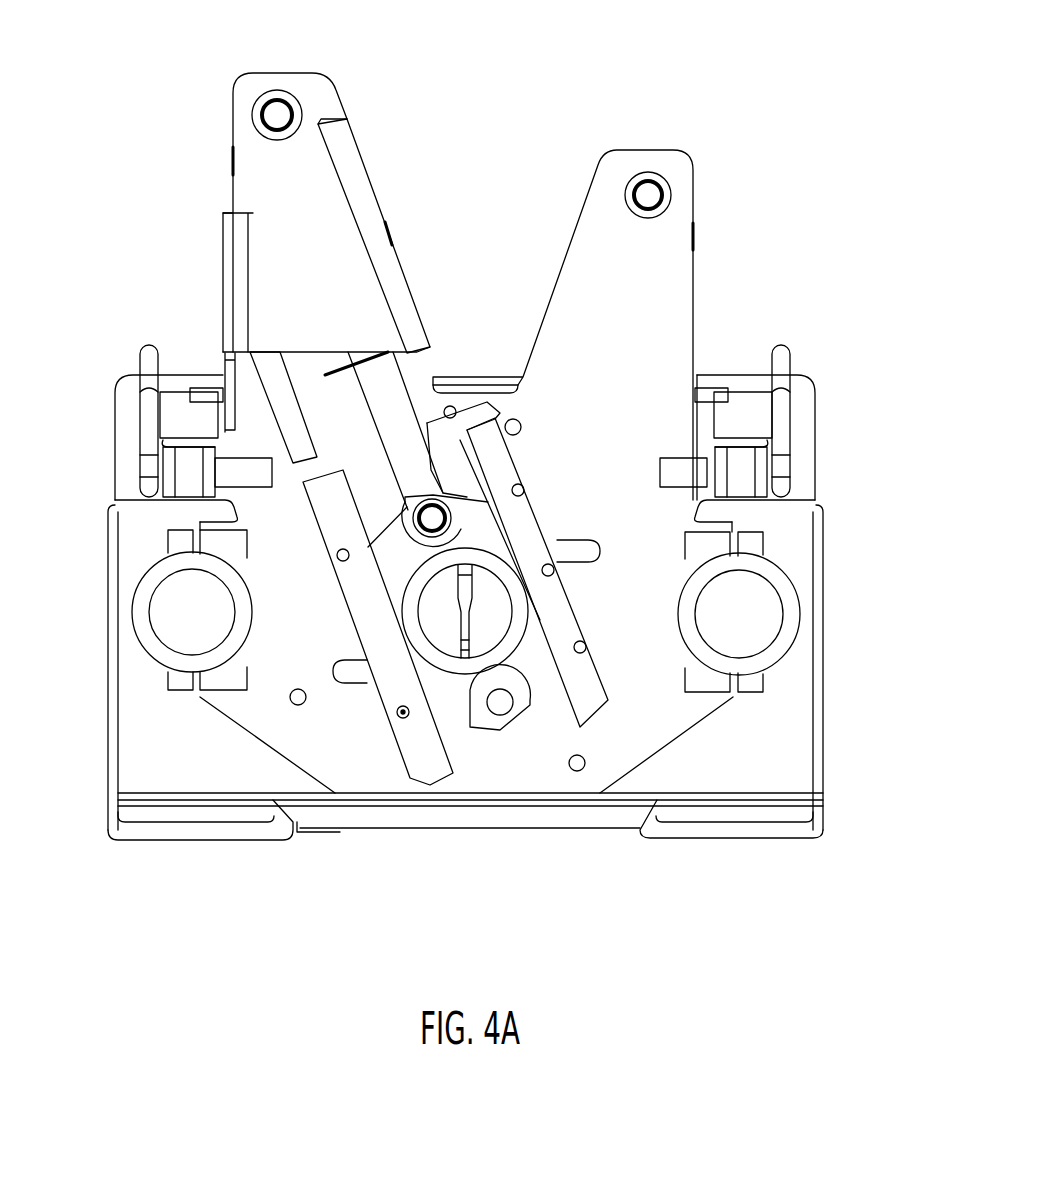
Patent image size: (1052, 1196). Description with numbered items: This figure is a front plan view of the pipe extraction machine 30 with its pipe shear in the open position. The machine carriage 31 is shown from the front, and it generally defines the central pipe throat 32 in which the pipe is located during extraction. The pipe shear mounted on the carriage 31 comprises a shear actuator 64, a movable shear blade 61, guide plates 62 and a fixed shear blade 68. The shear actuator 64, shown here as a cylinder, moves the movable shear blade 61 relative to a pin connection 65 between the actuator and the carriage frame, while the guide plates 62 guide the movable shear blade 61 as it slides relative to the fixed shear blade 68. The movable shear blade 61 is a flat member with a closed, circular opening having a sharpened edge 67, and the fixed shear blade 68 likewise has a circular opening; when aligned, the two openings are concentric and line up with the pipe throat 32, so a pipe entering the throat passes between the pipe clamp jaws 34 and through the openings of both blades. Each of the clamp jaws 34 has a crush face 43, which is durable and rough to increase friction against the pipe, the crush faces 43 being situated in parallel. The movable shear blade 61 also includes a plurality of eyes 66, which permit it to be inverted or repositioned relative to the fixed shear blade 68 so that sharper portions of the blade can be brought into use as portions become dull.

The pipe extraction machine 30 is at (155, 103).
The machine carriage 31 is at (503, 187).
The pipe throat 32 is at (436, 626).
The pipe clamp jaws 34 is at (487, 625).
The crush face 43 is at (478, 572).
The movable shear blade 61 is at (593, 710).
The guide plates 62 is at (413, 753).
The shear actuator 64 is at (388, 418).
The pin connection 65 is at (412, 520).
The eyes 66 is at (507, 713).
The sharpened edge 67 is at (470, 632).
The fixed shear blade 68 is at (450, 450).